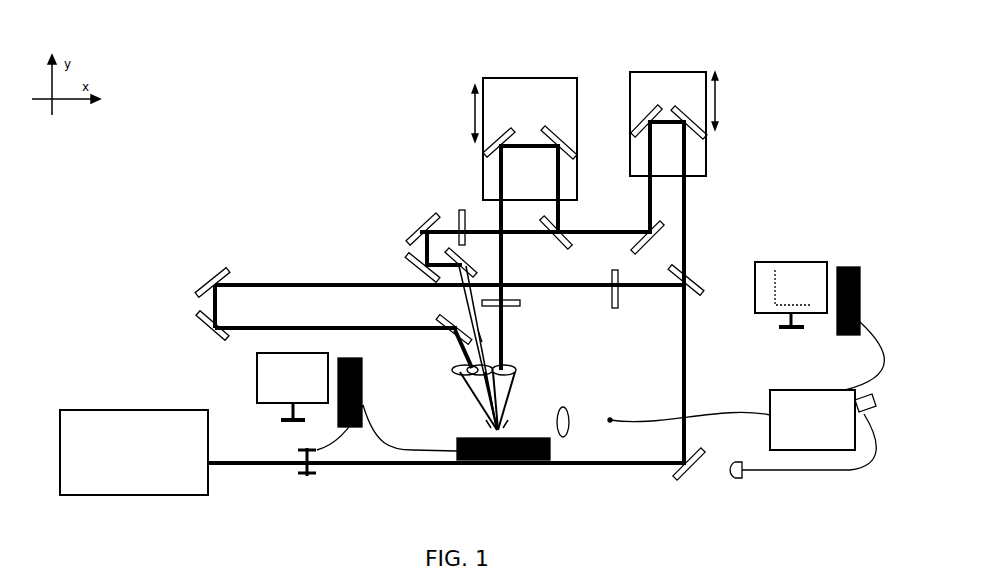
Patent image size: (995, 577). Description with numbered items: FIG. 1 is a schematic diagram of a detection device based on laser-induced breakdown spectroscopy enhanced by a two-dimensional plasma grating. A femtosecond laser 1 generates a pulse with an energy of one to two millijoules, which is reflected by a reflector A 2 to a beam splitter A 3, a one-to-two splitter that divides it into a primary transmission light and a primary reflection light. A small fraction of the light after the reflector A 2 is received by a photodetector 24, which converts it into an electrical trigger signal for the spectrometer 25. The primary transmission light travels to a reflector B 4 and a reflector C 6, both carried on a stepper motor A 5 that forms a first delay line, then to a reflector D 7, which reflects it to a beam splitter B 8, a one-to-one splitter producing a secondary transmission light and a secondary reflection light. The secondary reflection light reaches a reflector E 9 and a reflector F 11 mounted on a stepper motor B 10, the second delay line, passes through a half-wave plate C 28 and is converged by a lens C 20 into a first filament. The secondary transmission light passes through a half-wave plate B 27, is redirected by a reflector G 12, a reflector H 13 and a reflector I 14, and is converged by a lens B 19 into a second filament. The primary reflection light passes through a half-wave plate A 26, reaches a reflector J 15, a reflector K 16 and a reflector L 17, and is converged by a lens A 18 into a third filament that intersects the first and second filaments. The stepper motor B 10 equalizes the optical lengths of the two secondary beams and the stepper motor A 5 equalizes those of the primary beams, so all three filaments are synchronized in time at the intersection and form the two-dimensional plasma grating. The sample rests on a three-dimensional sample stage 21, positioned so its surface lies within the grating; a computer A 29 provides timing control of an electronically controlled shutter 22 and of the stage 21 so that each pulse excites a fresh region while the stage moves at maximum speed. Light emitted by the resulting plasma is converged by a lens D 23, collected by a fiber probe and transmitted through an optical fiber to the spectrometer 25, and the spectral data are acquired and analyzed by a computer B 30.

The femtosecond laser 1 is at (134, 452).
The reflector A 2 is at (680, 480).
The beam splitter A 3 is at (700, 295).
The reflector B 4 is at (711, 136).
The stepper motor A 5 is at (688, 72).
The reflector C 6 is at (637, 135).
The reflector D 7 is at (645, 250).
The beam splitter B 8 is at (557, 246).
The reflector E 9 is at (577, 158).
The stepper motor B 10 is at (520, 77).
The reflector F 11 is at (487, 156).
The reflector G 12 is at (412, 238).
The reflector H 13 is at (425, 281).
The reflector I 14 is at (476, 262).
The reflector J 15 is at (214, 268).
The reflector K 16 is at (214, 342).
The reflector L 17 is at (450, 337).
The lens A 18 is at (457, 373).
The lens B 19 is at (487, 332).
The lens C 20 is at (510, 376).
The three-dimensional sample stage 21 is at (489, 462).
The electronically controlled shutter 22 is at (306, 477).
The lens D 23 is at (567, 435).
The photodetector 24 is at (733, 481).
The spectrometer 25 is at (746, 396).
The half-wave plate A 26 is at (612, 308).
The half-wave plate B 27 is at (458, 215).
The half-wave plate C 28 is at (514, 306).
The computer A 29 is at (272, 406).
The computer B 30 is at (768, 315).